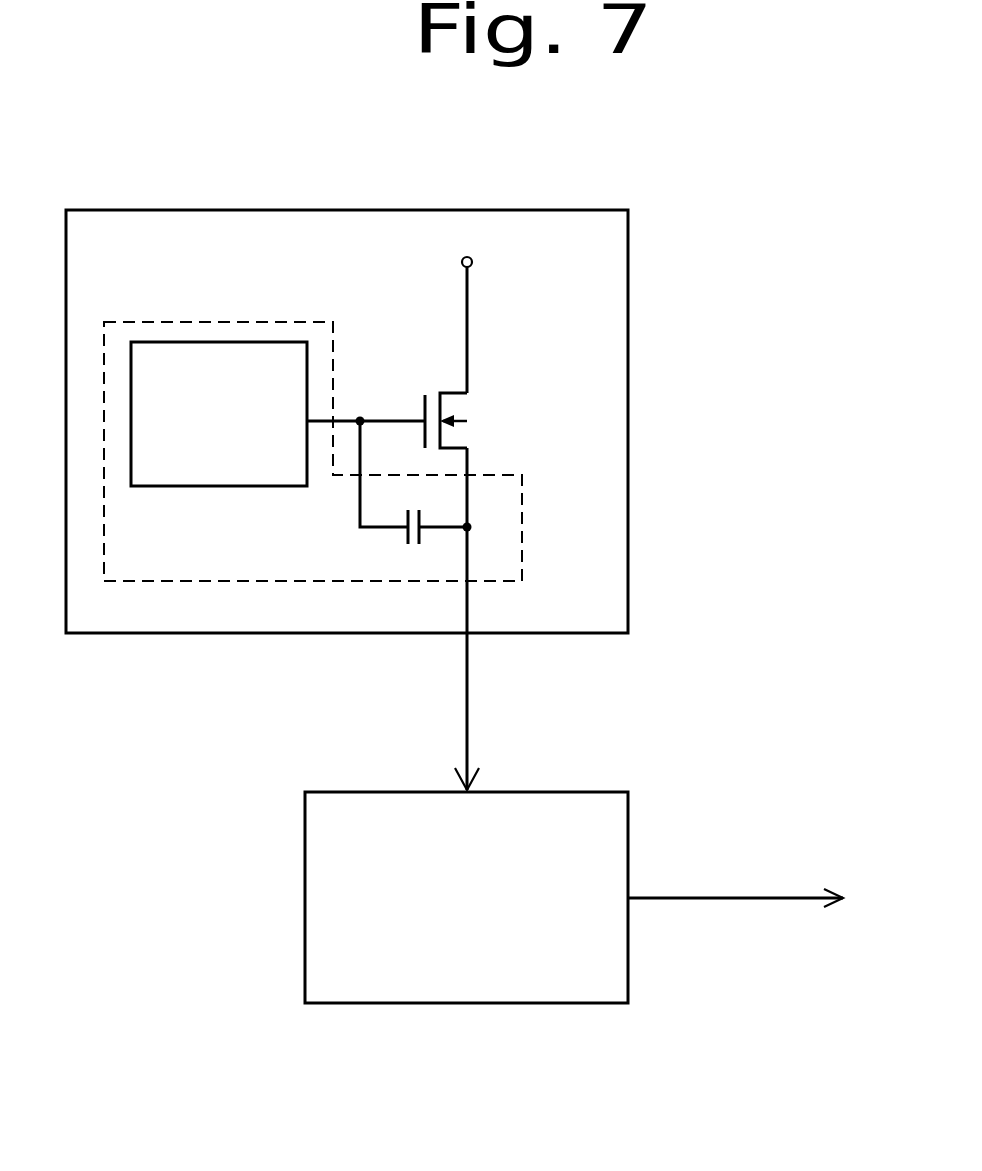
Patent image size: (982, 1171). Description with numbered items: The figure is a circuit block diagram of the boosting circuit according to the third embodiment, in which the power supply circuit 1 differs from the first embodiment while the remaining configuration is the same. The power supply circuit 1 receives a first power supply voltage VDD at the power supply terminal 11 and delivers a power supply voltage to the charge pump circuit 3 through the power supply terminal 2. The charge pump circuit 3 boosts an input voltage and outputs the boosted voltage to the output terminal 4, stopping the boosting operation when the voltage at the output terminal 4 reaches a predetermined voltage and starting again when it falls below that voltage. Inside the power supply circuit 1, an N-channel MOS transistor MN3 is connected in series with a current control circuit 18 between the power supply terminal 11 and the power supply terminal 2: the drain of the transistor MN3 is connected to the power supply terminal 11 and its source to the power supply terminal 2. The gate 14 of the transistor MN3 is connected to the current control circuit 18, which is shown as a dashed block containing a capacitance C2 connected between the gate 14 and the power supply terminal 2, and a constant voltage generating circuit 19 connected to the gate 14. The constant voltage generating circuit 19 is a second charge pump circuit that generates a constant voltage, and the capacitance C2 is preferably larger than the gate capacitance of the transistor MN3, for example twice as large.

The power supply circuit 1 is at (628, 315).
The power supply terminal 2 is at (468, 687).
The charge pump circuit 3 is at (305, 898).
The output terminal 4 is at (733, 898).
The power supply terminal 11 is at (473, 262).
The gate 14 is at (360, 421).
The current control circuit 18 is at (200, 322).
The constant voltage generating circuit 19 is at (225, 486).
The N-channel MOS transistor MN3 is at (462, 437).
The capacitance C2 is at (415, 544).